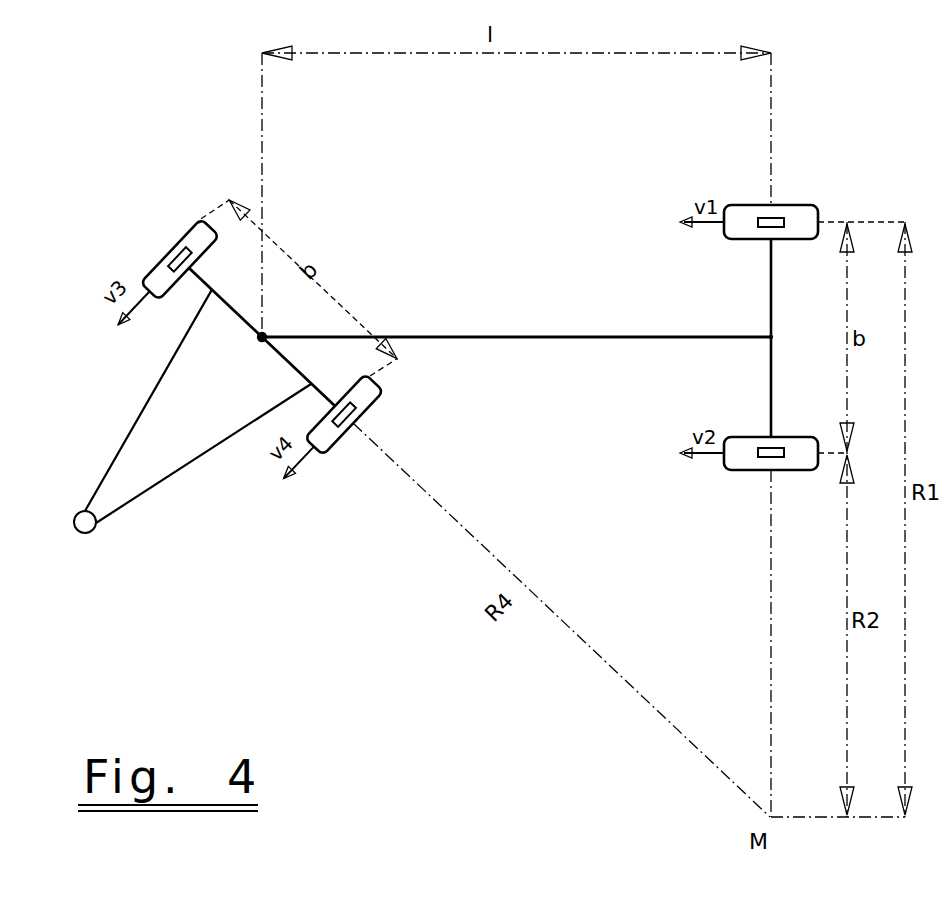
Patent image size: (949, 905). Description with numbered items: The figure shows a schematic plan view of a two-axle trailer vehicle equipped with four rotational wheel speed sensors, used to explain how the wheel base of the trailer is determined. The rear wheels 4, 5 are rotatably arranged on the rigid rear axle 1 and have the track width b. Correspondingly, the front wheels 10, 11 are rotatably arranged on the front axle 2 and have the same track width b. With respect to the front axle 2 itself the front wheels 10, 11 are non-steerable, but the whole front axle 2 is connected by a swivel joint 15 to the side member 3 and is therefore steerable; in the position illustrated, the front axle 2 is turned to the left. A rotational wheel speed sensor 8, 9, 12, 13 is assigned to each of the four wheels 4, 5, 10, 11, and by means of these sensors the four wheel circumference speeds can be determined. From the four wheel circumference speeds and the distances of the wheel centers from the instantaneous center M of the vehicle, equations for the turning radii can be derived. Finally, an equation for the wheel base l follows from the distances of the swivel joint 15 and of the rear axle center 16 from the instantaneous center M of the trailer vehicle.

The rigid rear axle 1 is at (771, 292).
The front axle 2 is at (290, 366).
The side member 3 is at (492, 336).
The rear wheel 4 is at (805, 218).
The rear wheel 5 is at (800, 468).
The rotational wheel speed sensor 8 is at (768, 217).
The rotational wheel speed sensor 9 is at (768, 460).
The front wheel 10 is at (196, 233).
The front wheel 11 is at (336, 443).
The rotational wheel speed sensor 12 is at (163, 259).
The rotational wheel speed sensor 13 is at (358, 417).
The swivel joint 15 is at (259, 340).
The rear axle center 16 is at (772, 337).